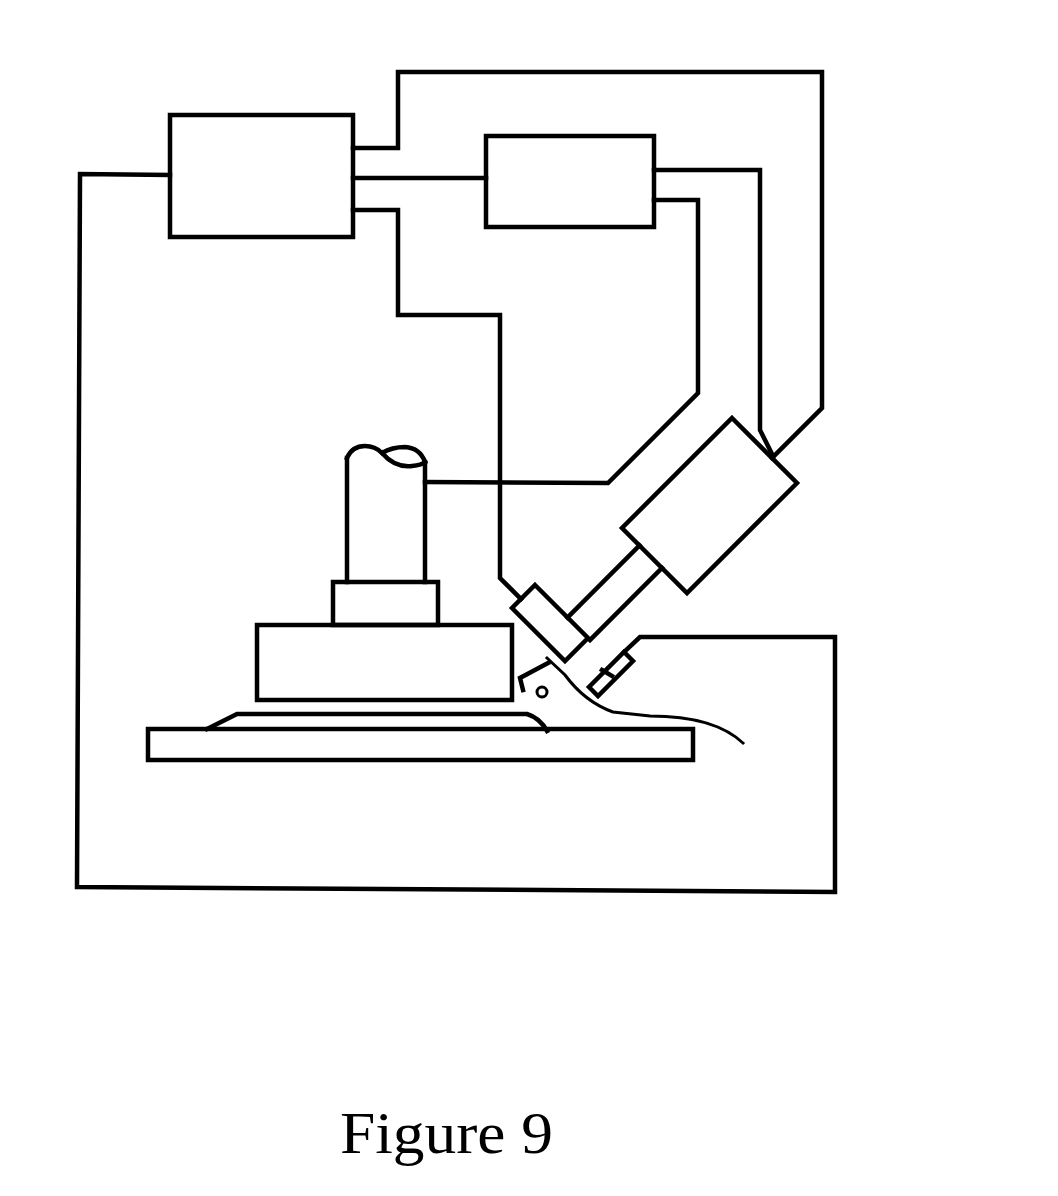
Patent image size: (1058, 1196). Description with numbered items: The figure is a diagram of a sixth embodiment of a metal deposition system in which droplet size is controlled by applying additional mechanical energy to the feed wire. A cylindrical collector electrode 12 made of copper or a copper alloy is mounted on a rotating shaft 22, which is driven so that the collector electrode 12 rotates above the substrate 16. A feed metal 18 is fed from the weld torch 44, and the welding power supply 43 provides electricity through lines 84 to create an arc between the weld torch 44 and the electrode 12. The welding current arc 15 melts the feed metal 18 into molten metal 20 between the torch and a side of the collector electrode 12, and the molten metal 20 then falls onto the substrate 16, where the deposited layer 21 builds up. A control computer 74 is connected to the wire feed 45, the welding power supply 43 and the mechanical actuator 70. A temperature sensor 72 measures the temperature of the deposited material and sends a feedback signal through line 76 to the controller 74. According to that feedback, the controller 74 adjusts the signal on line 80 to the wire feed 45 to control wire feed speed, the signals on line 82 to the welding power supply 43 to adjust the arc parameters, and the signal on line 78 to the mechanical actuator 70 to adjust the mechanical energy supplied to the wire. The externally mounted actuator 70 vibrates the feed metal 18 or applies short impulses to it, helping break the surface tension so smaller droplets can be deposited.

The collector electrode 12 is at (288, 633).
The welding current arc 15 is at (523, 700).
The substrate 16 is at (177, 738).
The feed metal 18 is at (663, 722).
The molten metal 20 is at (547, 695).
The film layer 21 is at (237, 718).
The rotating shaft 22 is at (358, 482).
The welding power supply 43 is at (560, 160).
The weld torch 44 is at (617, 600).
The wire feed 45 is at (728, 532).
The mechanical actuator 70 is at (552, 625).
The temperature sensor 72 is at (610, 680).
The control computer 74 is at (251, 155).
The line 76 is at (78, 208).
The line 78 is at (398, 305).
The line 80 is at (757, 72).
The line 82 is at (430, 176).
The lines 84 is at (760, 314).